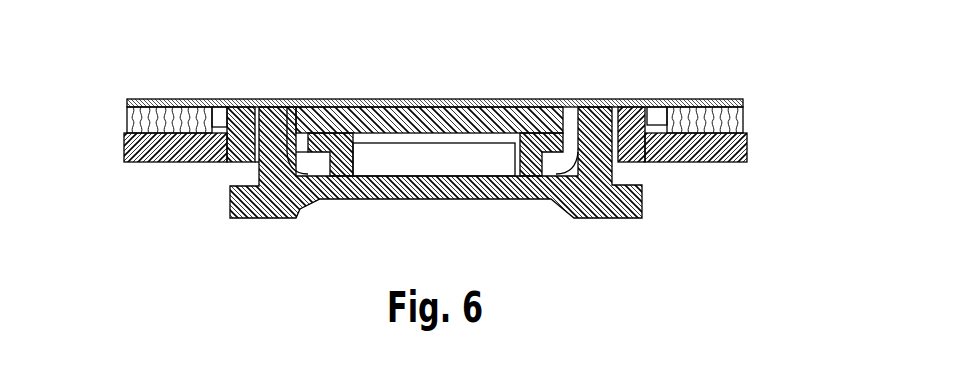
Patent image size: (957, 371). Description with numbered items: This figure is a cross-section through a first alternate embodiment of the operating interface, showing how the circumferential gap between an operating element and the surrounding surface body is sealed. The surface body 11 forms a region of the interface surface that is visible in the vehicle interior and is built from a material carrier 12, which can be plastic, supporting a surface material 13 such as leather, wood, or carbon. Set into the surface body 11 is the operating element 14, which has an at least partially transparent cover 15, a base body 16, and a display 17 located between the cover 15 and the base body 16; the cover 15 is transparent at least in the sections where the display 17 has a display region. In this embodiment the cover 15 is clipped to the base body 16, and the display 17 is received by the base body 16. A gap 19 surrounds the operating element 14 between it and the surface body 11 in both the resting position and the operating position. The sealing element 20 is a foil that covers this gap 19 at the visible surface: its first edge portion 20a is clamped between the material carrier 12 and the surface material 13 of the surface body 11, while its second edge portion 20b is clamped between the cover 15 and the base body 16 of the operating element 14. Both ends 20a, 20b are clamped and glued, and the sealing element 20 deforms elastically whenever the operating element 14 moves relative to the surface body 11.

The surface body 11 is at (437, 147).
The material carrier 12 is at (123, 160).
The surface material 13 is at (162, 98).
The operating element 14 is at (428, 93).
The cover 15 is at (365, 98).
The base body 16 is at (636, 222).
The display 17 is at (453, 160).
The gap 19 is at (250, 168).
The sealing element 20 is at (237, 98).
The first edge portion 20a is at (667, 98).
The second edge portion 20b is at (567, 98).